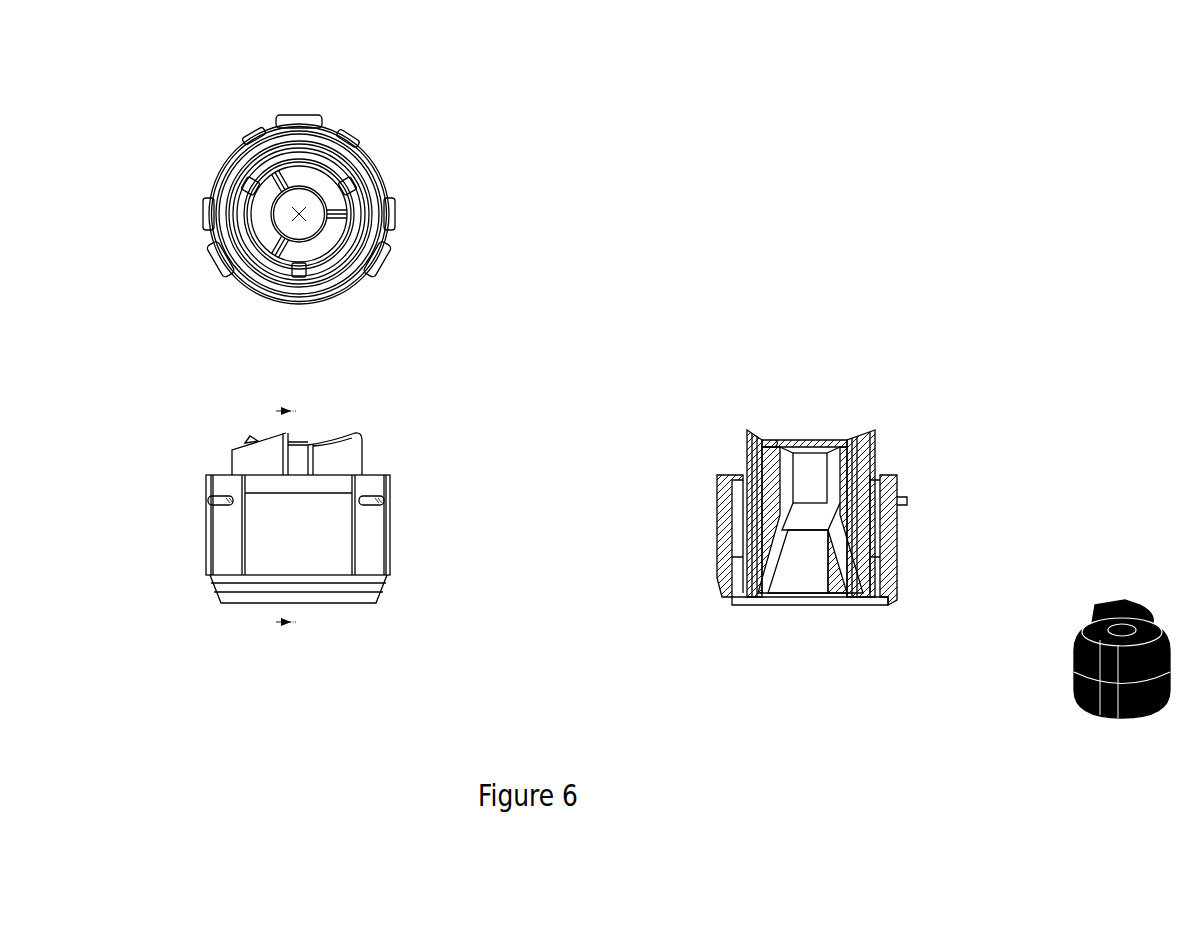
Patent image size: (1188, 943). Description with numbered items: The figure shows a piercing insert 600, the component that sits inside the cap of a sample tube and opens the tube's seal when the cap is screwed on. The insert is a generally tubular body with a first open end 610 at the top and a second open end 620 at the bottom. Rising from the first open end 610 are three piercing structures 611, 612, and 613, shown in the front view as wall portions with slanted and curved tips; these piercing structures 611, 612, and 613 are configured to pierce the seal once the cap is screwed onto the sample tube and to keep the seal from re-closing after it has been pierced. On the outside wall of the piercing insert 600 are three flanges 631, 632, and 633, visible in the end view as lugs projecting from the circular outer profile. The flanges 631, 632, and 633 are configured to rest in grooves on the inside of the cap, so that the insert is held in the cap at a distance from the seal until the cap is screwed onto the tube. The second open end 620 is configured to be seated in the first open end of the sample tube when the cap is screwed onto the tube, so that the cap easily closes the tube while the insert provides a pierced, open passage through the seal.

The piercing insert 600 is at (617, 545).
The first open end 610 is at (289, 423).
The piercing structure 611 is at (362, 452).
The piercing structure 612 is at (237, 445).
The piercing structure 613 is at (252, 437).
The second open end 620 is at (307, 620).
The flange 631 is at (305, 111).
The flange 632 is at (385, 263).
The flange 633 is at (210, 268).